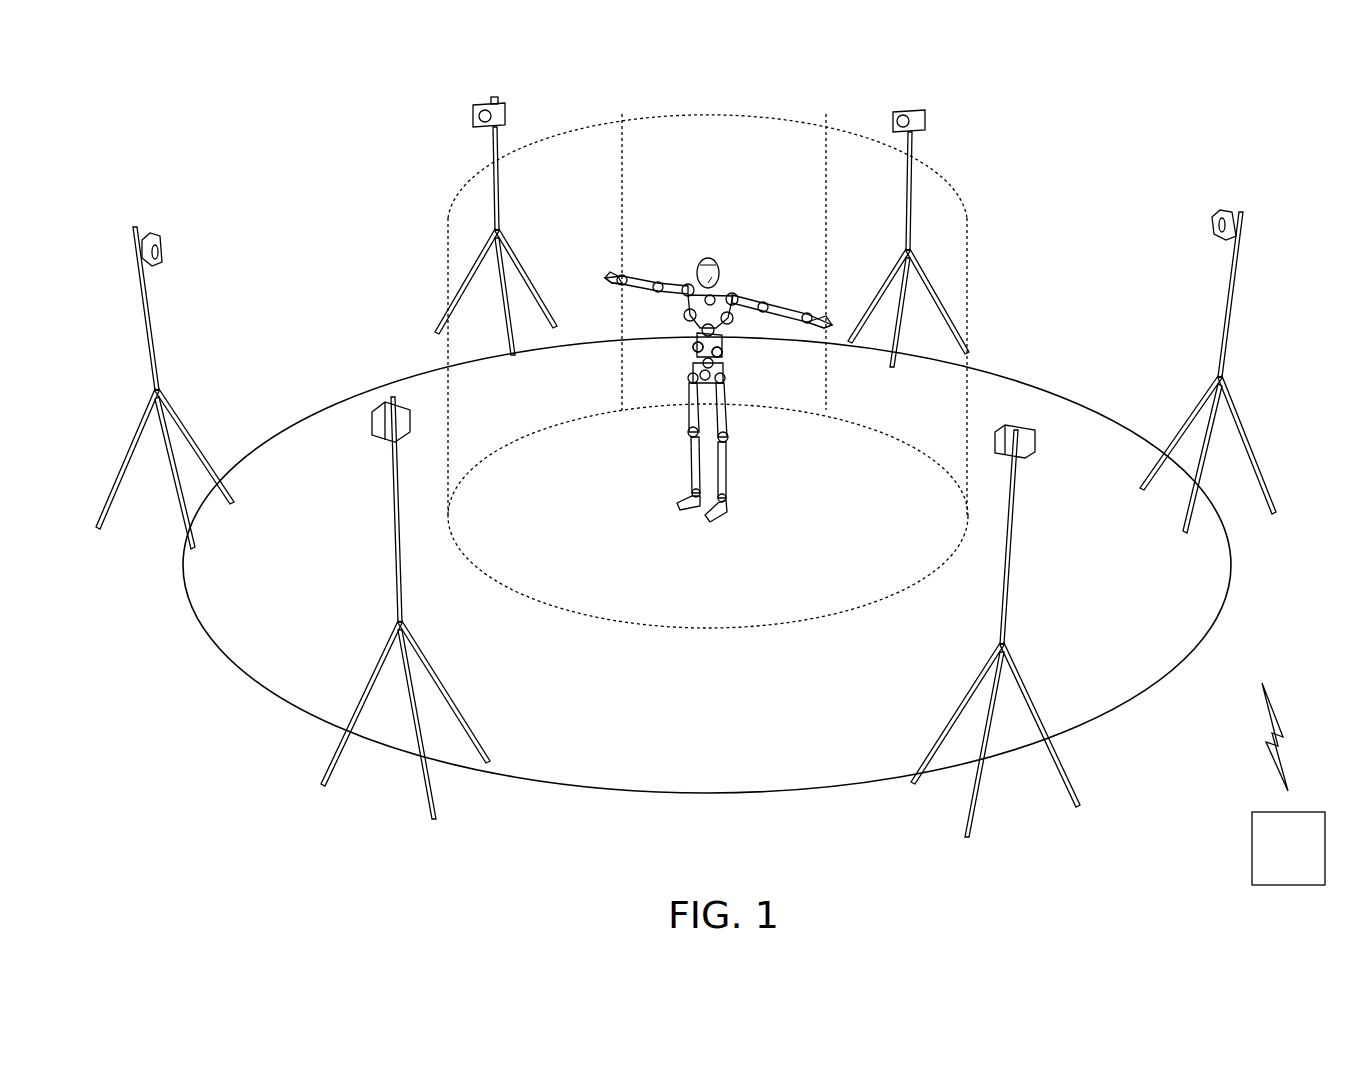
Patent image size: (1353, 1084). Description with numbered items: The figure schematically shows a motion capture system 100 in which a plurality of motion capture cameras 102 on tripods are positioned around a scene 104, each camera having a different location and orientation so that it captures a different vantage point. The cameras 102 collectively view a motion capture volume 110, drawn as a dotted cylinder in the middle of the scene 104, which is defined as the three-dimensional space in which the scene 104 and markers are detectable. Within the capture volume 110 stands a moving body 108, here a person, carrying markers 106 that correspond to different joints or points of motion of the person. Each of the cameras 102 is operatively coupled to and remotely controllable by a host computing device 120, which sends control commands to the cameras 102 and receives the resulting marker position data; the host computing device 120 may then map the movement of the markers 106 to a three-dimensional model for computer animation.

The motion capture system 100 is at (1066, 126).
The motion capture cameras 102 is at (141, 245).
The scene 104 is at (293, 124).
The markers 106 is at (748, 318).
The moving body 108 is at (740, 262).
The motion capture volume 110 is at (722, 106).
The host computing device 120 is at (1306, 859).